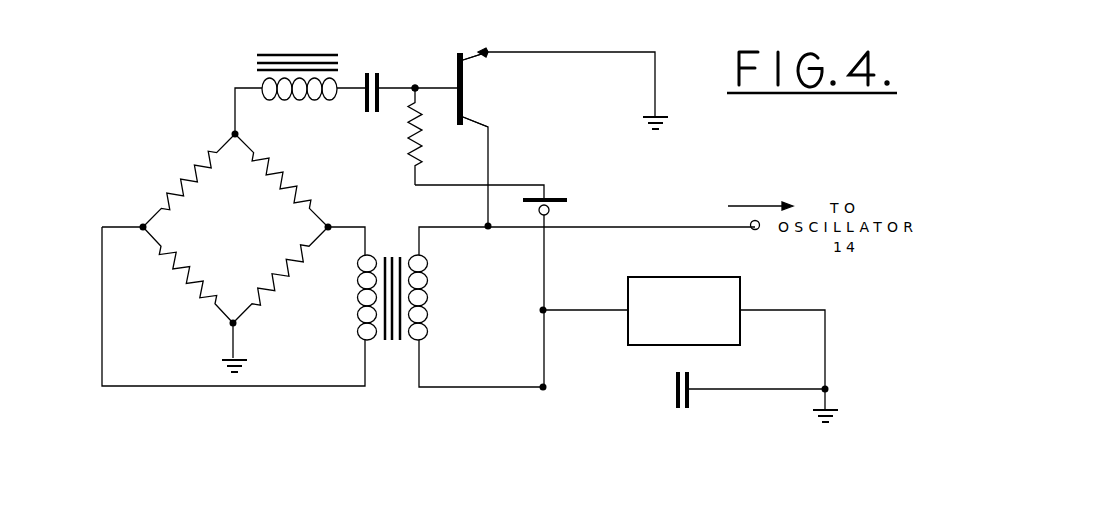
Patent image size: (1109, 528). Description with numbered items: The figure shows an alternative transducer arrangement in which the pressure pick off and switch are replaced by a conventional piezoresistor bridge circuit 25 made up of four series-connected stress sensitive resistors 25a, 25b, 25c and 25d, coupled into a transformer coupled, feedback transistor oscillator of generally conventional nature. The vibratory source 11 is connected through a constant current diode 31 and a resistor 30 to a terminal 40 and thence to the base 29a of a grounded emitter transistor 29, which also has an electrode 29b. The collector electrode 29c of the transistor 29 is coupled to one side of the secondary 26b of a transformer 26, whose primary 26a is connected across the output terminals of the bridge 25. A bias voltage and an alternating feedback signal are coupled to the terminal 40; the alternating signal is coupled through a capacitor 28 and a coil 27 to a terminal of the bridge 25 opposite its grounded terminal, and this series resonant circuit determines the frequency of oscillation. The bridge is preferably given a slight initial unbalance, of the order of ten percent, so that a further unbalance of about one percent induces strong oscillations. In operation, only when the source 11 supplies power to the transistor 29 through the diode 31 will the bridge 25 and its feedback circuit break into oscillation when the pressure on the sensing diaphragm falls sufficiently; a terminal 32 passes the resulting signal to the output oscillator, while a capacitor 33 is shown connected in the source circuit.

The vibratory source 11 is at (628, 293).
The piezoresistor bridge circuit 25 is at (248, 238).
The stress sensitive resistor 25a is at (186, 165).
The stress sensitive resistor 25b is at (295, 170).
The stress sensitive resistor 25c is at (287, 277).
The stress sensitive resistor 25d is at (168, 268).
The transformer 26 is at (397, 331).
The primary 26a is at (356, 307).
The secondary 26b is at (428, 310).
The coil 27 is at (312, 53).
The capacitor 28 is at (368, 72).
The grounded emitter transistor 29 is at (486, 88).
The base 29a is at (458, 118).
The electrode 29b is at (482, 52).
The collector electrode 29c is at (485, 125).
The resistor 30 is at (413, 158).
The constant current diode 31 is at (564, 199).
The output terminal 32 is at (750, 230).
The capacitor 33 is at (675, 382).
The terminal 40 is at (415, 85).